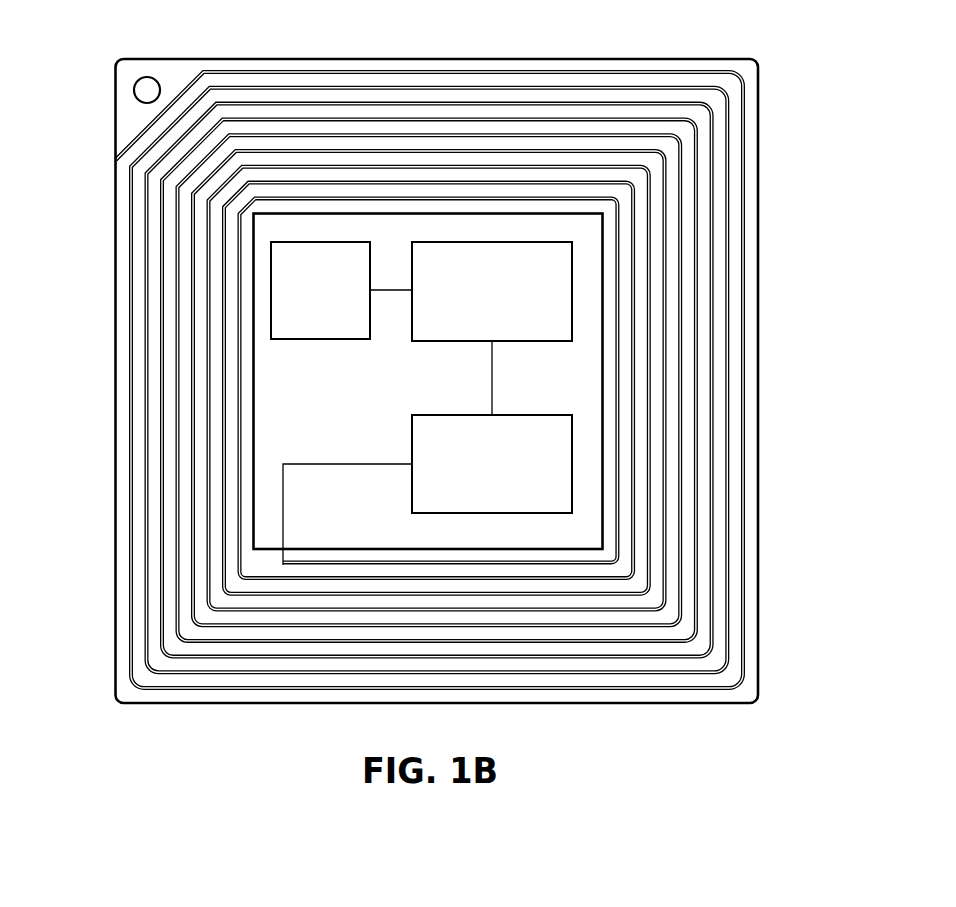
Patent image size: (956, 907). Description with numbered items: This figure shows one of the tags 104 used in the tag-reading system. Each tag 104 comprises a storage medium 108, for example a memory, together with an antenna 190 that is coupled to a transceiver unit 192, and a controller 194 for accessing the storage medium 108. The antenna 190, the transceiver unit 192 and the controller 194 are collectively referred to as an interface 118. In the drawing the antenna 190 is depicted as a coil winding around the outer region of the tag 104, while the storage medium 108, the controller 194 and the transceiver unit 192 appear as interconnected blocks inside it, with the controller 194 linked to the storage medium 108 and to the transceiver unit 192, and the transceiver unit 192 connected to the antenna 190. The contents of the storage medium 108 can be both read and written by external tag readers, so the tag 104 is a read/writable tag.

The tag 104 is at (103, 53).
The storage medium 108 is at (320, 265).
The interface 118 is at (538, 468).
The antenna 190 is at (668, 493).
The transceiver unit 192 is at (427, 490).
The controller 194 is at (471, 328).